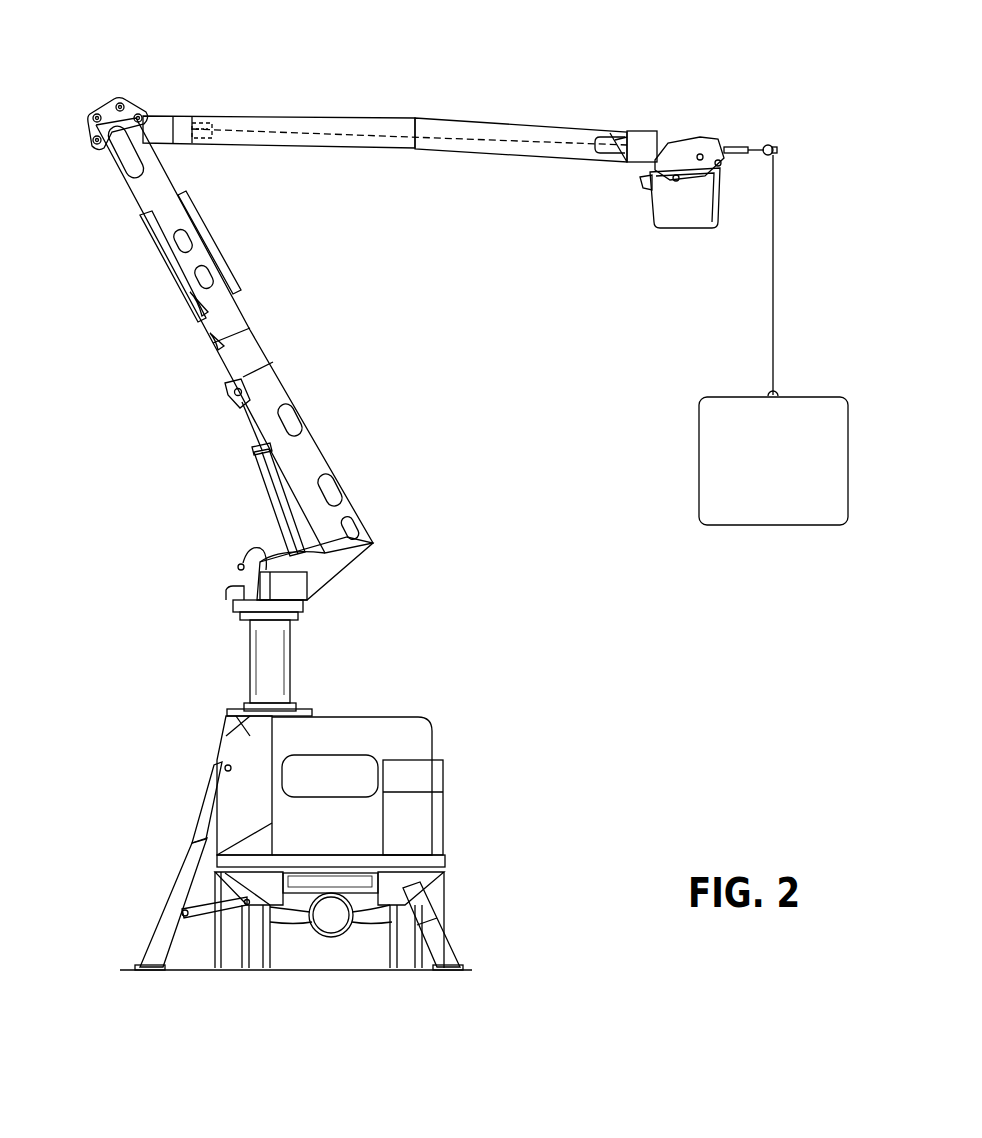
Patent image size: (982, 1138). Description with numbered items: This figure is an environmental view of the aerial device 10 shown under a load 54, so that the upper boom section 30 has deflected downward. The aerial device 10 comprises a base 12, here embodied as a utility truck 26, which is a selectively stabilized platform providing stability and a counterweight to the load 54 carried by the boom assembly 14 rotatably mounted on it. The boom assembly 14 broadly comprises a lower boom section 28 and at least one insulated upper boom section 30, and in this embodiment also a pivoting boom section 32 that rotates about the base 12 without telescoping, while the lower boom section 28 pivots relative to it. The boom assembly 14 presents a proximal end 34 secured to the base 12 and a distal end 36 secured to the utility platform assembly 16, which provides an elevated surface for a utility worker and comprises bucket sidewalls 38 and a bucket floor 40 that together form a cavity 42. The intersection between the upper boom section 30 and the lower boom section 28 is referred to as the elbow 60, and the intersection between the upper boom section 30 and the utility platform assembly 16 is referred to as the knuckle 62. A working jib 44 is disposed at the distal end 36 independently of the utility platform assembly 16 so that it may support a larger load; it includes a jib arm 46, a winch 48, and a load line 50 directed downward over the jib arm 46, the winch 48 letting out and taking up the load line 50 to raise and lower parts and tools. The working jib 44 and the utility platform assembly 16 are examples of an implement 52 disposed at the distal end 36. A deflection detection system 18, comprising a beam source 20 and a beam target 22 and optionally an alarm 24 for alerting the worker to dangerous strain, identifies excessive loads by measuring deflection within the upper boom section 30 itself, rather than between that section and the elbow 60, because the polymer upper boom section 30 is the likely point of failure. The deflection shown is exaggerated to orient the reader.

The aerial device 10 is at (157, 58).
The base 12 is at (352, 700).
The boom assembly 14 is at (413, 313).
The utility platform assembly 16 is at (745, 205).
The deflection detection system 18 is at (215, 128).
The beam source 20 is at (205, 140).
The beam target 22 is at (612, 150).
The alarm 24 is at (485, 825).
The utility truck 26 is at (430, 718).
The lower boom section 28 is at (265, 338).
The upper boom section 30 is at (425, 105).
The pivoting boom section 32 is at (355, 577).
The proximal end 34 is at (185, 585).
The distal end 36 is at (652, 112).
The bucket sidewalls 38 is at (642, 205).
The bucket floor 40 is at (682, 245).
The cavity 42 is at (675, 142).
The working jib 44 is at (731, 138).
The jib arm 46 is at (757, 138).
The winch 48 is at (778, 135).
The load line 50 is at (773, 318).
The implement 52 is at (740, 55).
The load 54 is at (805, 397).
The elbow 60 is at (85, 112).
The knuckle 62 is at (620, 120).